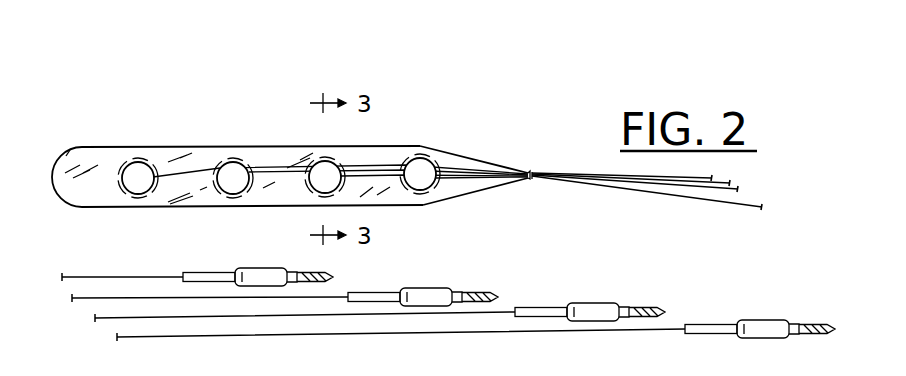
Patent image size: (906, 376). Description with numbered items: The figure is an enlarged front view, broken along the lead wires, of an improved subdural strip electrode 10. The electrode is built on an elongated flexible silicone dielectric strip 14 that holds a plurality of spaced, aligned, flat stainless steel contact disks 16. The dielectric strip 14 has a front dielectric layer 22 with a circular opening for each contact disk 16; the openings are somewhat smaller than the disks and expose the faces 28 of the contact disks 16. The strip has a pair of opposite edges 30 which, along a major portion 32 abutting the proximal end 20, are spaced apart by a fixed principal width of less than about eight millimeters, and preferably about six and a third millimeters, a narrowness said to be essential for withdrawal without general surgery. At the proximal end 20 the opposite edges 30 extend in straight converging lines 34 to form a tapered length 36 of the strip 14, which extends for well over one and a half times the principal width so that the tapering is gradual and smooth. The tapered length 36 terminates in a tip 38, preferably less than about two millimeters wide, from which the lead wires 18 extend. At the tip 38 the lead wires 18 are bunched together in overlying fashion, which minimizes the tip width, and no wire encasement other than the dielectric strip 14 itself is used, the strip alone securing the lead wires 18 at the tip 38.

The subdural strip electrode 10 is at (412, 82).
The dielectric strip 14 is at (198, 155).
The contact disk 16 is at (136, 160).
The lead wire 18 is at (128, 276).
The proximal end 20 is at (498, 186).
The front dielectric layer 22 is at (78, 210).
The contact disk face 28 is at (145, 175).
The opposite edges 30 is at (265, 145).
The major portion 32 is at (108, 165).
The converging lines 34 is at (445, 143).
The tapered length 36 is at (455, 190).
The tip 38 is at (532, 172).